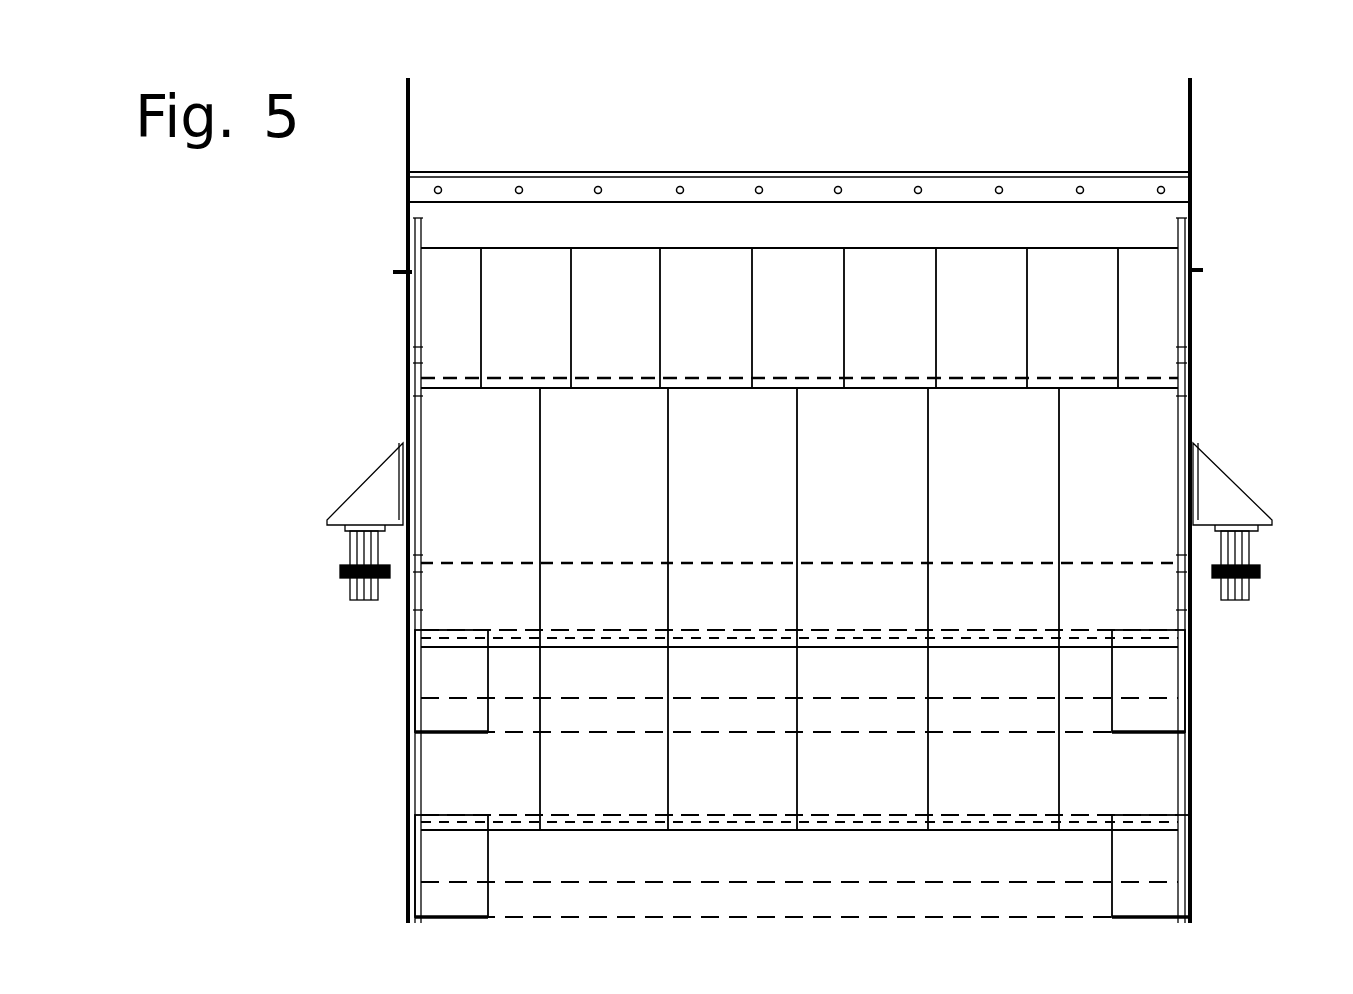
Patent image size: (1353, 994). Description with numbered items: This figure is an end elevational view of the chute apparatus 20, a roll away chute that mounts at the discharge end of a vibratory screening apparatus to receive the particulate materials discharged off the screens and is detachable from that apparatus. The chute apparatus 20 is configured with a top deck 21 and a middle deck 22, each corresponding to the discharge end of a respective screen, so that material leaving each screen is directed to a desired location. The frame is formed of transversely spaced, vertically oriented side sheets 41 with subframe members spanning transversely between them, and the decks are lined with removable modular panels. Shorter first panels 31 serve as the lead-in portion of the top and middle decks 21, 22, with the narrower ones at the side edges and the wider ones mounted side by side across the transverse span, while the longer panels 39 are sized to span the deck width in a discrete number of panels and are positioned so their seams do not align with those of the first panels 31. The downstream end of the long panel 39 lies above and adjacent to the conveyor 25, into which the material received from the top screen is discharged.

The chute apparatus 20 is at (292, 377).
The top deck 21 is at (968, 234).
The middle deck 22 is at (1072, 700).
The conveyor 25 is at (447, 717).
The first panel 31 is at (972, 275).
The second embodiment of the panels 39 is at (726, 492).
The side sheets 41 is at (408, 215).